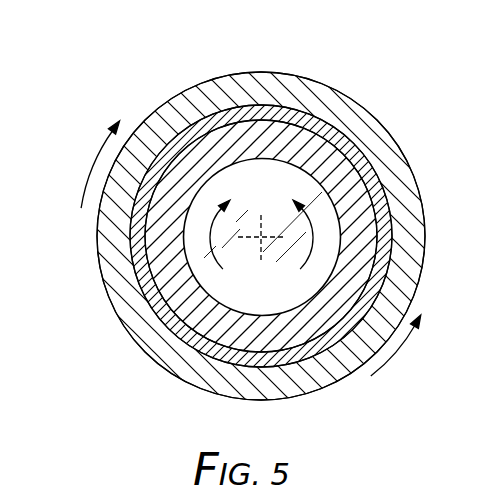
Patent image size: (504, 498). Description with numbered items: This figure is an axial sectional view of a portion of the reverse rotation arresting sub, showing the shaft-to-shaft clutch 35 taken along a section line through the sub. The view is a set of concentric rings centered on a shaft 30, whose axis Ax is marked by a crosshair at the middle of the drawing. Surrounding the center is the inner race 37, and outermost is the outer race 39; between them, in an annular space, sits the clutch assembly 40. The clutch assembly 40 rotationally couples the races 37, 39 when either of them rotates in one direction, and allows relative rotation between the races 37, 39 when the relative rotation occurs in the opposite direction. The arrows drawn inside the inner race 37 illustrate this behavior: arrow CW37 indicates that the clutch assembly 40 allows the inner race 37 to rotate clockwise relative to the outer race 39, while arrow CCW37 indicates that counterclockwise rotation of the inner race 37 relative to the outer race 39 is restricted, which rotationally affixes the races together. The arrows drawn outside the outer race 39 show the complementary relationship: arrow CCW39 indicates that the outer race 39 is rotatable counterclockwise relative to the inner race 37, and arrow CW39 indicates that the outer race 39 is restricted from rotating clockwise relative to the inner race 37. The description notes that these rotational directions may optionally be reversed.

The shaft / inner rotor 30 is at (243, 288).
The shaft-to-shaft clutch 35 is at (131, 346).
The inner race 37 is at (238, 137).
The outer race 39 is at (165, 113).
The clutch assembly 40 is at (298, 112).
The axis of rotation Ax is at (268, 231).
The arrow CW37 is at (217, 232).
The arrow CCW37 is at (314, 224).
The arrow CW39 is at (96, 157).
The arrow CCW39 is at (388, 374).